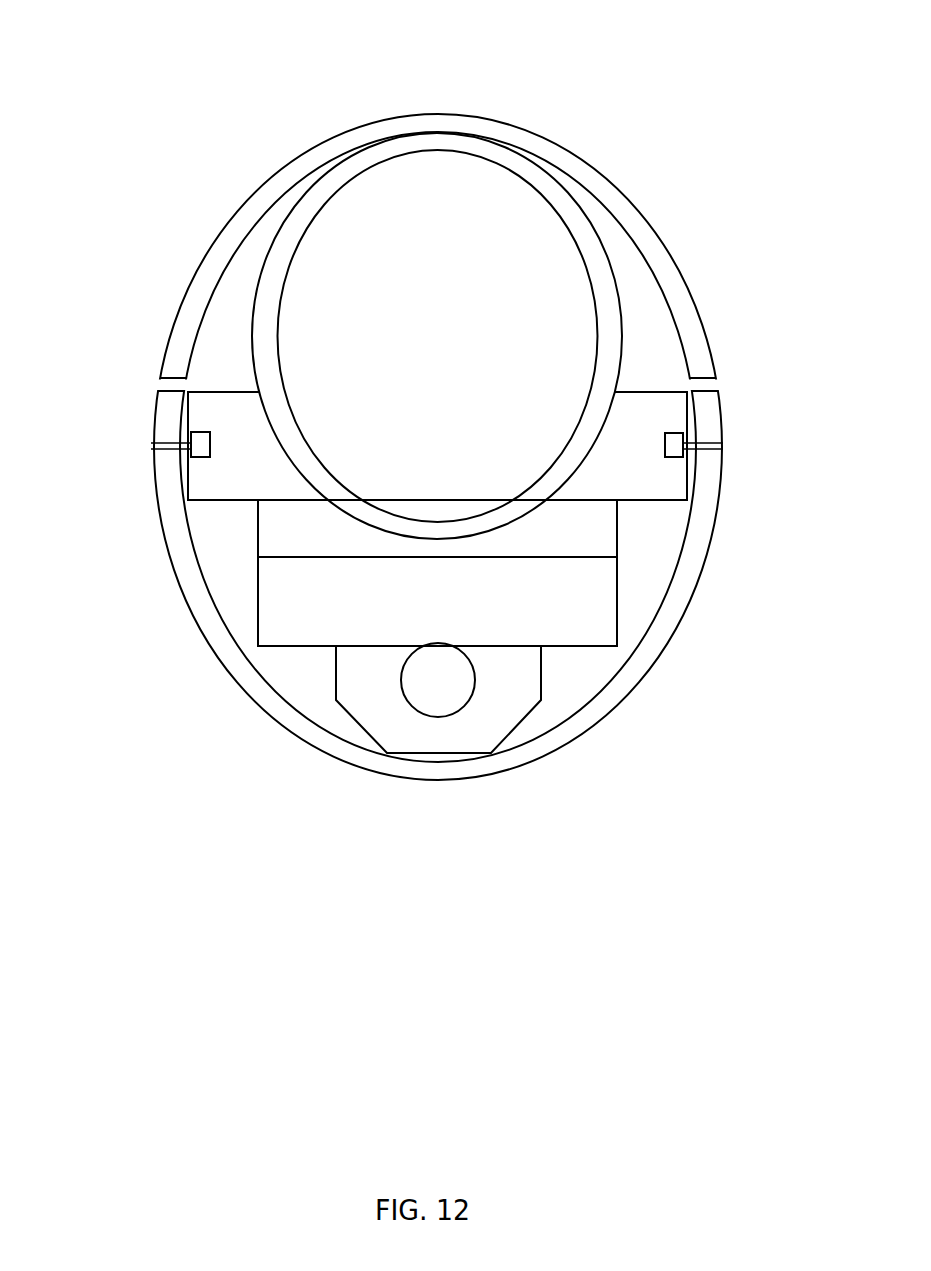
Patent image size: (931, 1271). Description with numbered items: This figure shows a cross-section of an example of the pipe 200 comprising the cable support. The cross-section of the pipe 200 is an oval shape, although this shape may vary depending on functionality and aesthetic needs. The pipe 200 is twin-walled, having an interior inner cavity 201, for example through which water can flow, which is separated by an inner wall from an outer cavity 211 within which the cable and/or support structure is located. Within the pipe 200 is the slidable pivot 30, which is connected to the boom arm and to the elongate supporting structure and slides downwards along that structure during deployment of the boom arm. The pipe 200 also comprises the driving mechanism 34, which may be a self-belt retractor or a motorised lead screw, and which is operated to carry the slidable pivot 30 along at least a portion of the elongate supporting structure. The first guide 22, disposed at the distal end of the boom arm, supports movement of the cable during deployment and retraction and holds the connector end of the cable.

The pipe 200 is at (236, 104).
The interior inner cavity 201 is at (475, 202).
The outer cavity 211 is at (647, 548).
The slidable pivot 30 is at (197, 438).
The driving mechanism 34 is at (268, 532).
The first guide 22 is at (493, 713).